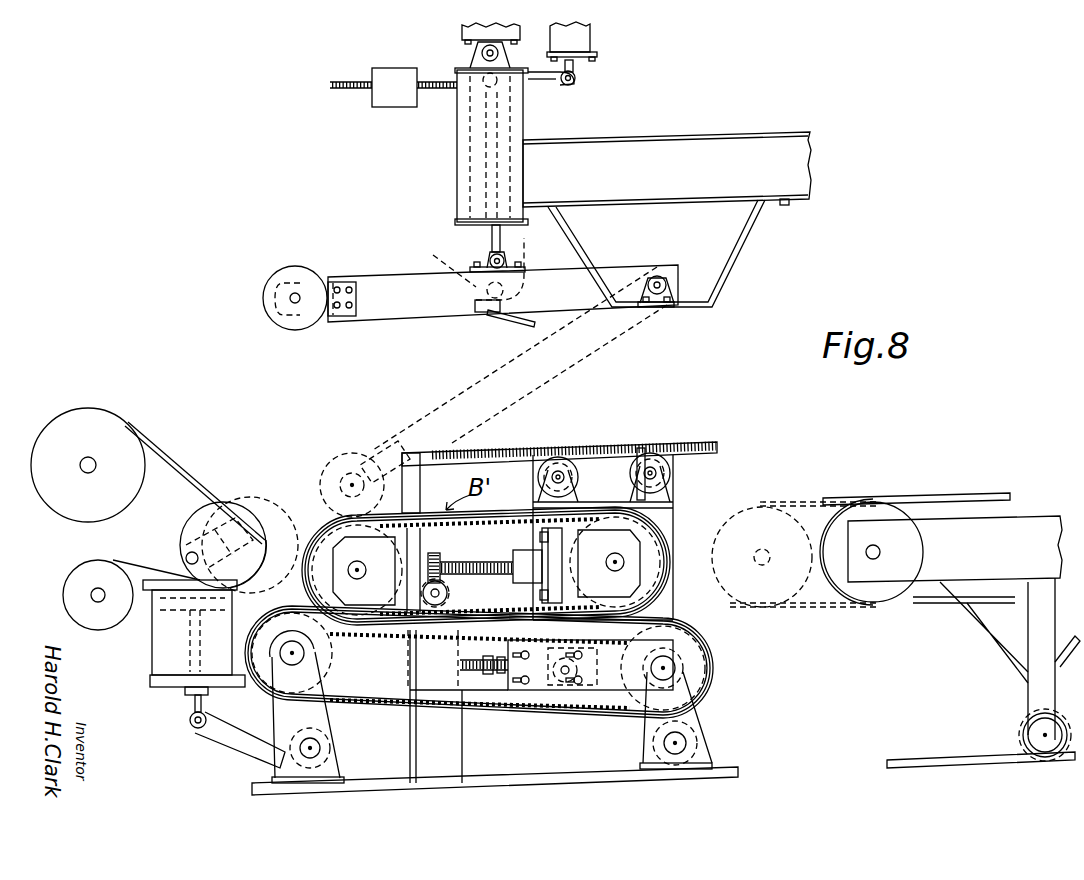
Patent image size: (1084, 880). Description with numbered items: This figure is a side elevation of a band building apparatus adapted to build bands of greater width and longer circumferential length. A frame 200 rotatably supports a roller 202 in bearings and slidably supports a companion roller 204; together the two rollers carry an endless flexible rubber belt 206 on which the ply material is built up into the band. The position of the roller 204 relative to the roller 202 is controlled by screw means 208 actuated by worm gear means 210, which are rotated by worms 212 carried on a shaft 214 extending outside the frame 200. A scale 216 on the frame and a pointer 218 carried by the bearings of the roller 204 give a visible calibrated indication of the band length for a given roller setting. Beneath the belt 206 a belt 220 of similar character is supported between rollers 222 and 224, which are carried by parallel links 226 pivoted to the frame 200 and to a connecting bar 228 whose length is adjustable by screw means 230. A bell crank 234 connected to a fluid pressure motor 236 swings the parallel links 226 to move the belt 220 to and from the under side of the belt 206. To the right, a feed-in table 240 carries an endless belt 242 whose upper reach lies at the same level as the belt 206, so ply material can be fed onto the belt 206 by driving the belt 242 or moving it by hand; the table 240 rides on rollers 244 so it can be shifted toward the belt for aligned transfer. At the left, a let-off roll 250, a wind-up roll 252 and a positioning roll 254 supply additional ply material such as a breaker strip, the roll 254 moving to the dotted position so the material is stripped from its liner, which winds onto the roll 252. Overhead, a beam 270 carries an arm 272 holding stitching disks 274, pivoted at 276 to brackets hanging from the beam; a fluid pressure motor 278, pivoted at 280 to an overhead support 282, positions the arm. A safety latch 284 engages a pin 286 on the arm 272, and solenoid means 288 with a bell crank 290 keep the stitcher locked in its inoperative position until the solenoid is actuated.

The frame 200 is at (545, 776).
The roller 202 is at (328, 552).
The companion roller 204 is at (650, 545).
The flexible rubber belt 206 is at (470, 560).
The screw means 208 is at (490, 580).
The worm gear means 210 is at (437, 553).
The worms 212 is at (448, 593).
The shaft 214 is at (436, 604).
The scale 216 is at (533, 452).
The pointer 218 is at (632, 452).
The belt 220 is at (588, 710).
The roller 222 is at (267, 673).
The roller 224 is at (700, 670).
The parallel links 226 is at (320, 720).
The connecting bar 228 is at (405, 677).
The screw means 230 is at (505, 673).
The bell crank 234 is at (263, 742).
The fluid pressure motor 236 is at (172, 660).
The feed-in table 240 is at (1005, 515).
The endless belt 242 is at (915, 600).
The rollers 244 is at (1022, 735).
The let-off roll 250 is at (100, 435).
The wind-up roll 252 is at (75, 590).
The positioning roll 254 is at (215, 508).
The beam 270 is at (651, 160).
The arm 272 is at (405, 305).
The stitching disks 274 is at (305, 330).
The pivot 276 is at (668, 290).
The fluid pressure motor 278 is at (472, 172).
The pivot 280 is at (481, 56).
The overhead support 282 is at (520, 30).
The safety latch 284 is at (508, 257).
The pin 286 is at (465, 275).
The solenoid means 288 is at (592, 38).
The bell crank 290 is at (545, 82).